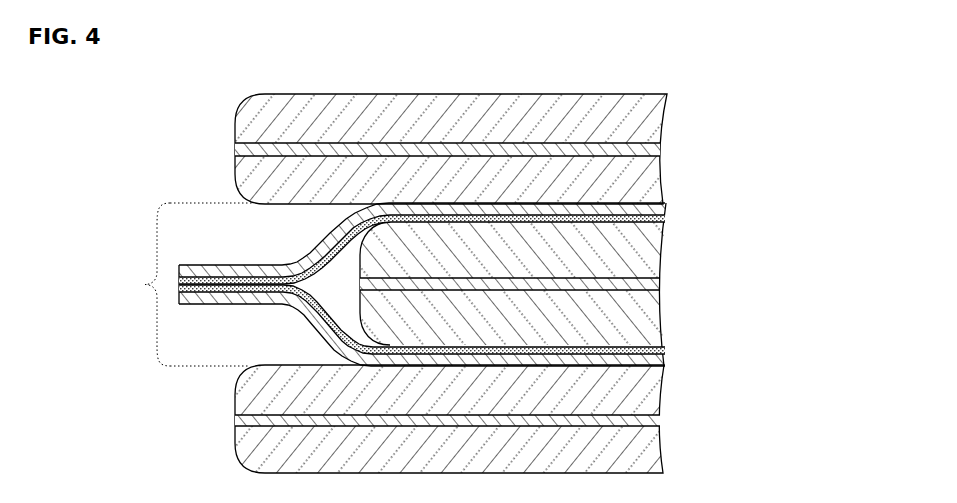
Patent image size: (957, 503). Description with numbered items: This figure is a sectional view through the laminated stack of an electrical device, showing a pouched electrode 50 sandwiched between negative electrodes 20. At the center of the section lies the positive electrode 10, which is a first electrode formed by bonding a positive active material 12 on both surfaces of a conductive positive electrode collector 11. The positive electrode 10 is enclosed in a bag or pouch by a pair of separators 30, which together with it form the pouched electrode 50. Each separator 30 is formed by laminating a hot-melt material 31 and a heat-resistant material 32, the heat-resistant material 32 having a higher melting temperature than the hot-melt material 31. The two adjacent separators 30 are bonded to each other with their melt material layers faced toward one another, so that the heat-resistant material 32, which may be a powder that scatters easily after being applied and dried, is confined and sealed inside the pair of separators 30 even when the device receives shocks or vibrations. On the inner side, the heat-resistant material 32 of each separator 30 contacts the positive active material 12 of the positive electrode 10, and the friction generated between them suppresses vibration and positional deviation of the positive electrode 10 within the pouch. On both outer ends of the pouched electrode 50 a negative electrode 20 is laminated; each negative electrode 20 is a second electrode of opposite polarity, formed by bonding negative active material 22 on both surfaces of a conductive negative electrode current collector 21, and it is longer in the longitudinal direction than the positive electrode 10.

The positive electrode 10 is at (561, 284).
The positive electrode collector 11 is at (668, 280).
The positive active material 12 is at (668, 244).
The negative electrode 20 is at (403, 287).
The negative electrode current collector 21 is at (235, 145).
The negative active material 22 is at (237, 120).
The separator 30 is at (422, 284).
The hot-melt material 31 is at (306, 246).
The heat-resistant material 32 is at (226, 222).
The pouched electrode 50 is at (393, 284).